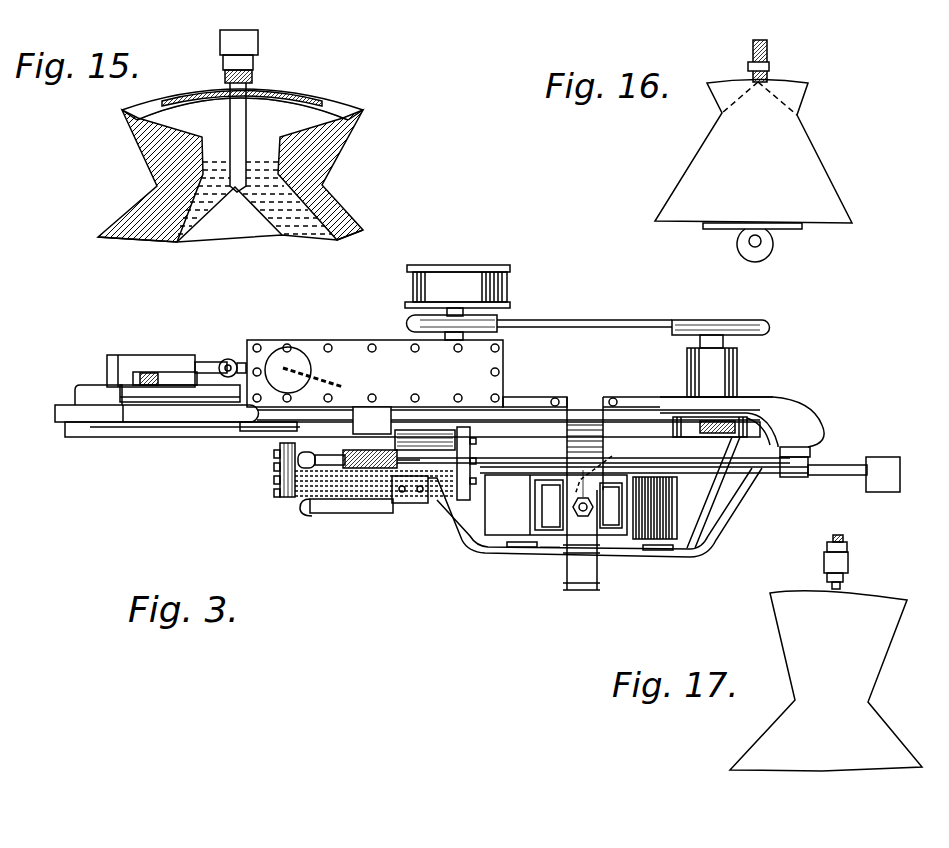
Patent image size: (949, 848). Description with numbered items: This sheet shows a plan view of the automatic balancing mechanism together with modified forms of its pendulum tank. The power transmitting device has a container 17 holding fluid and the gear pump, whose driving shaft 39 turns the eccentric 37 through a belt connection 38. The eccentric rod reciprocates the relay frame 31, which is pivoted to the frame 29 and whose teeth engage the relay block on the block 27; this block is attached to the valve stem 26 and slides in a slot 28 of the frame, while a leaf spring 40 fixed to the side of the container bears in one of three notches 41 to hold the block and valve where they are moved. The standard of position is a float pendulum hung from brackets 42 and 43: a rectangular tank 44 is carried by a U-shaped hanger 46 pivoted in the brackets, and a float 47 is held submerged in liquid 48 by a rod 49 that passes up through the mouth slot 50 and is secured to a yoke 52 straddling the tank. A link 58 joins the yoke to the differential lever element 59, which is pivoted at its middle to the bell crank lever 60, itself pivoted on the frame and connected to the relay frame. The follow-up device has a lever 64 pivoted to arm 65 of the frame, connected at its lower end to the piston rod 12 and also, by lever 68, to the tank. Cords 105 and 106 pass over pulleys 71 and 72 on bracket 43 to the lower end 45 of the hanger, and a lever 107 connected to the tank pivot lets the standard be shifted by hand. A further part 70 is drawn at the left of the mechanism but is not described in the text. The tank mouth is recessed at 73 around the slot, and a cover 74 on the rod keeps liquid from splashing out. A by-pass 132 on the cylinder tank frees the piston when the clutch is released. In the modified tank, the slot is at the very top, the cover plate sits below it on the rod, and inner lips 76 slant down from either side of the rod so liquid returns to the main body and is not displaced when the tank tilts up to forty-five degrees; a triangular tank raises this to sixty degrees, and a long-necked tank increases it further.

In FIG. 3, the piston rod 12 is at (837, 476).
In FIG. 3, the container 17 is at (375, 373).
In FIG. 3, the valve stem 26 is at (207, 368).
In FIG. 3, the block 27 is at (133, 360).
In FIG. 3, the slot 28 is at (117, 391).
In FIG. 3, the frame 29 is at (522, 402).
In FIG. 3, the relay frame 31 is at (150, 420).
In FIG. 3, the eccentric 37 is at (688, 437).
In FIG. 3, the belt connection 38 is at (617, 326).
In FIG. 3, the driving shaft 39 is at (408, 305).
In FIG. 3, the leaf spring 40 is at (173, 380).
In FIG. 3, the notches 41 is at (158, 377).
In FIG. 3, the bracket 42 is at (586, 412).
In FIG. 3, the bracket 43 is at (601, 570).
In FIG. 3, the tank 44 is at (660, 510).
In FIG. 3, the lower end of hanger 45 is at (571, 567).
In FIG. 3, the U-shaped hanger 46 is at (587, 457).
In FIG. 15, the float 47 is at (229, 214).
In FIG. 3, the float 47 is at (605, 468).
In FIG. 15, the liquid 48 is at (305, 236).
In FIG. 15, the rod 49 is at (246, 133).
In FIG. 3, the rod 49 is at (573, 505).
In FIG. 15, the mouth slot 50 is at (214, 92).
In FIG. 3, the yoke 52 is at (592, 527).
In FIG. 3, the link 58 is at (521, 459).
In FIG. 3, the differential lever element 59 is at (400, 503).
In FIG. 3, the bell crank lever 60 is at (207, 440).
In FIG. 3, the lever 64 is at (812, 463).
In FIG. 3, the arm 65 is at (790, 423).
In FIG. 3, the lever 68 is at (737, 474).
In FIG. 3, the ribbed support 70 is at (289, 498).
In FIG. 3, the pulley 71 is at (510, 547).
In FIG. 3, the pulley 72 is at (655, 549).
In FIG. 3, the recess 73 is at (547, 513).
In FIG. 15, the cover 74 is at (288, 98).
In FIG. 3, the cover 74 is at (557, 522).
In FIG. 15, the inner lips 76 is at (142, 152).
In FIG. 3, the cord 105 is at (556, 542).
In FIG. 3, the cord 106 is at (651, 556).
In FIG. 3, the lever 107 is at (589, 594).
In FIG. 3, the by-pass 132 is at (352, 513).